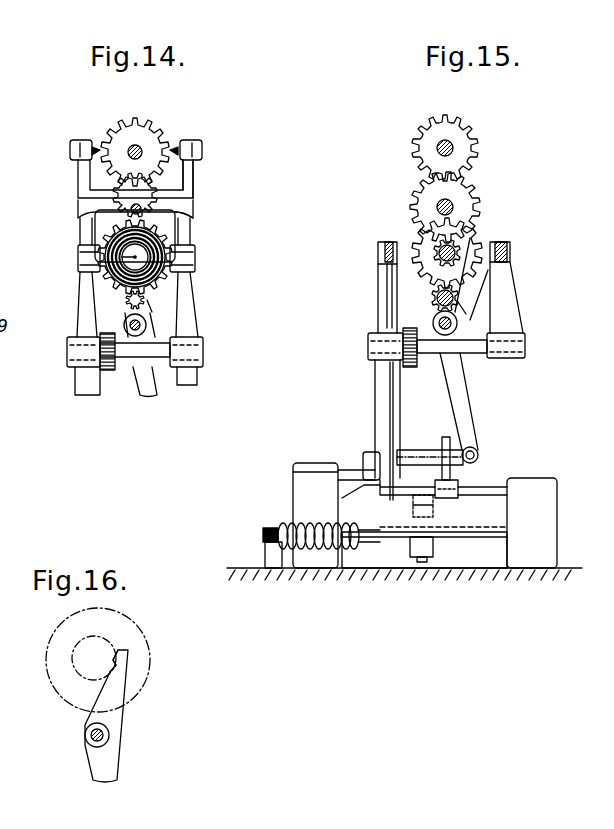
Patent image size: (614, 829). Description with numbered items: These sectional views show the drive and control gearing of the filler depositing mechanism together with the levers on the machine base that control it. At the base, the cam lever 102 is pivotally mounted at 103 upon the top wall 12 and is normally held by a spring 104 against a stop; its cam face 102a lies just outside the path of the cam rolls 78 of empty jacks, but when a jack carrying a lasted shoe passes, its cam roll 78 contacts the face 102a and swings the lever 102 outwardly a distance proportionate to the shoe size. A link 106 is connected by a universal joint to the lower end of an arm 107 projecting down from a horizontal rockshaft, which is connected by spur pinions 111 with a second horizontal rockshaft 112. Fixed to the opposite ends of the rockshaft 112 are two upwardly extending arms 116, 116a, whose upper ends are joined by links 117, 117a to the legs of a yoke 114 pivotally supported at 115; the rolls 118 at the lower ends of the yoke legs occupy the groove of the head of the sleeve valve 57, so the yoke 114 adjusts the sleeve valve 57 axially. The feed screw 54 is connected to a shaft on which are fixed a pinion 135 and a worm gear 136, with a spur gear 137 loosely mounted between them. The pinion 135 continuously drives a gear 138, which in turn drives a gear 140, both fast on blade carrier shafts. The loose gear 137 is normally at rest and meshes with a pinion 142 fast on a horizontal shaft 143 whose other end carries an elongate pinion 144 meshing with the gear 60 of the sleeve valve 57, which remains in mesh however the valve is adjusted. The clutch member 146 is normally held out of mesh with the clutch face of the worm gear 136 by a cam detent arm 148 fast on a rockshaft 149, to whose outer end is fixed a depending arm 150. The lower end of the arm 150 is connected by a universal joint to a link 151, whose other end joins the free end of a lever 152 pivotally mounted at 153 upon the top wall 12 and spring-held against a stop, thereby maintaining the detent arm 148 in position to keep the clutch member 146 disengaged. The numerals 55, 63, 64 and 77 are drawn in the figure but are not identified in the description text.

In FIG. 15, the top wall 12 is at (367, 569).
In FIG. 14, the feed screw 54 is at (195, 252).
In FIG. 14, the feed roll gear 55 is at (113, 242).
In FIG. 14, the sleeve valve 57 is at (198, 262).
In FIG. 14, the gear 60 is at (195, 212).
In FIG. 14, the right frame post 63 is at (190, 198).
In FIG. 14, the yoke plate 64 is at (100, 194).
In FIG. 15, the actuating lever 77 is at (458, 452).
In FIG. 15, the cam roll 78 is at (459, 484).
In FIG. 15, the cam lever 102 is at (487, 522).
In FIG. 15, the cam face 102a is at (483, 487).
In FIG. 15, the pivot 103 is at (530, 471).
In FIG. 15, the spring 104 is at (315, 522).
In FIG. 15, the link 106 is at (433, 510).
In FIG. 14, the arm 107 is at (80, 392).
In FIG. 15, the arm 107 is at (375, 378).
In FIG. 15, the spur pinions 111 is at (404, 366).
In FIG. 14, the second horizontal rockshaft 112 is at (163, 368).
In FIG. 15, the second horizontal rockshaft 112 is at (474, 353).
In FIG. 14, the yoke 114 is at (192, 170).
In FIG. 14, the pivot 115 is at (173, 148).
In FIG. 14, the upwardly extending arm 116 is at (80, 300).
In FIG. 15, the upwardly extending arm 116 is at (378, 306).
In FIG. 14, the upwardly extending arm 116a is at (192, 290).
In FIG. 15, the upwardly extending arm 116a is at (505, 306).
In FIG. 14, the link 117 is at (82, 242).
In FIG. 15, the link 117 is at (383, 243).
In FIG. 14, the link 117a is at (188, 232).
In FIG. 15, the link 117a is at (503, 240).
In FIG. 14, the rolls 118 is at (80, 277).
In FIG. 15, the pinion 135 is at (432, 248).
In FIG. 14, the worm gear 136 is at (152, 306).
In FIG. 15, the worm gear 136 is at (483, 272).
In FIG. 16, the worm gear 136 is at (55, 693).
In FIG. 15, the spur gear 137 is at (467, 238).
In FIG. 14, the gear 138 is at (143, 192).
In FIG. 15, the gear 138 is at (464, 202).
In FIG. 14, the gear 140 is at (137, 117).
In FIG. 15, the gear 140 is at (458, 148).
In FIG. 15, the pinion 142 is at (458, 292).
In FIG. 14, the horizontal shaft 143 is at (120, 310).
In FIG. 14, the elongate pinion 144 is at (128, 303).
In FIG. 16, the clutch member 146 is at (74, 667).
In FIG. 15, the cam detent arm 148 is at (464, 310).
In FIG. 16, the cam detent arm 148 is at (108, 687).
In FIG. 14, the horizontal rockshaft 149 is at (147, 322).
In FIG. 15, the horizontal rockshaft 149 is at (458, 323).
In FIG. 16, the horizontal rockshaft 149 is at (103, 736).
In FIG. 14, the depending arm 150 is at (142, 375).
In FIG. 15, the depending arm 150 is at (458, 403).
In FIG. 16, the depending arm 150 is at (96, 758).
In FIG. 15, the link 151 is at (407, 453).
In FIG. 15, the lever 152 is at (348, 478).
In FIG. 15, the pivot 153 is at (310, 460).